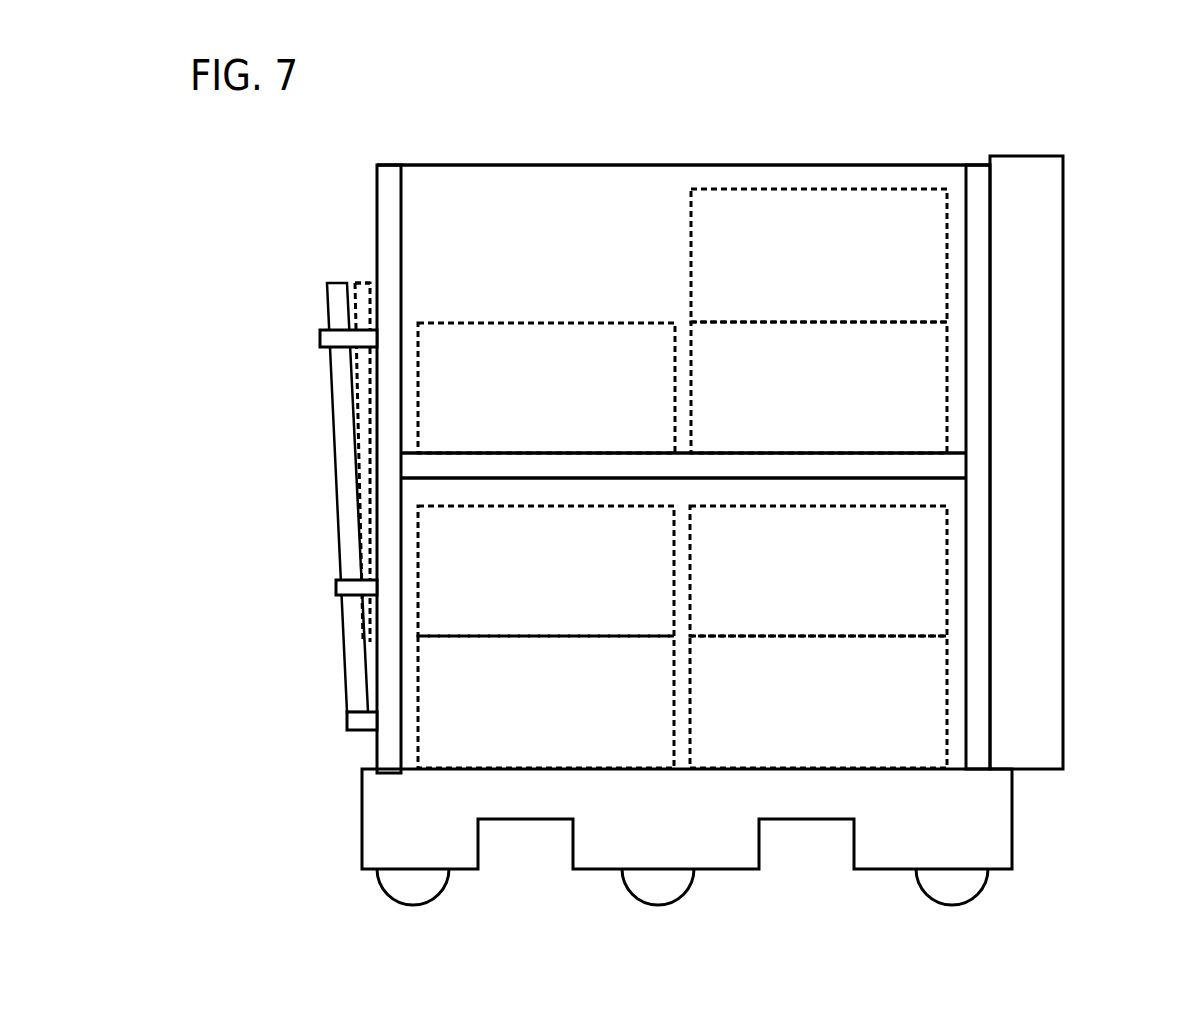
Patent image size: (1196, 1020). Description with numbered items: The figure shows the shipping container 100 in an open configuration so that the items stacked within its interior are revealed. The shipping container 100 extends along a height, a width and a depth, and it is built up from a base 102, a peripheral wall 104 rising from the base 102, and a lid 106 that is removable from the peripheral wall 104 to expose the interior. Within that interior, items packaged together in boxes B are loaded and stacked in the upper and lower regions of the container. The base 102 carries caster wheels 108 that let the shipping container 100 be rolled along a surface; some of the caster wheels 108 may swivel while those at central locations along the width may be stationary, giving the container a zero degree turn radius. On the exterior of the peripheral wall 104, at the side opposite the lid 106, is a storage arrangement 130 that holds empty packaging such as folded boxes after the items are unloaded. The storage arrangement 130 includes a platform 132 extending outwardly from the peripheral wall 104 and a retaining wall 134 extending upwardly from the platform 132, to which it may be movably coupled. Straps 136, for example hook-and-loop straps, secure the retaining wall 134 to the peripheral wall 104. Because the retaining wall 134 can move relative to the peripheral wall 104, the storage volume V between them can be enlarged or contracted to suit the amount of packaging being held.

The shipping container 100 is at (975, 118).
The base 102 is at (1005, 830).
The peripheral wall 104 is at (603, 165).
The lid 106 is at (1066, 373).
The caster wheels 108 is at (980, 895).
The storage arrangement 130 is at (328, 506).
The platform 132 is at (347, 720).
The retaining wall 134 is at (343, 457).
The straps 136 is at (330, 336).
The bins B is at (537, 323).
The storage volume V is at (351, 276).